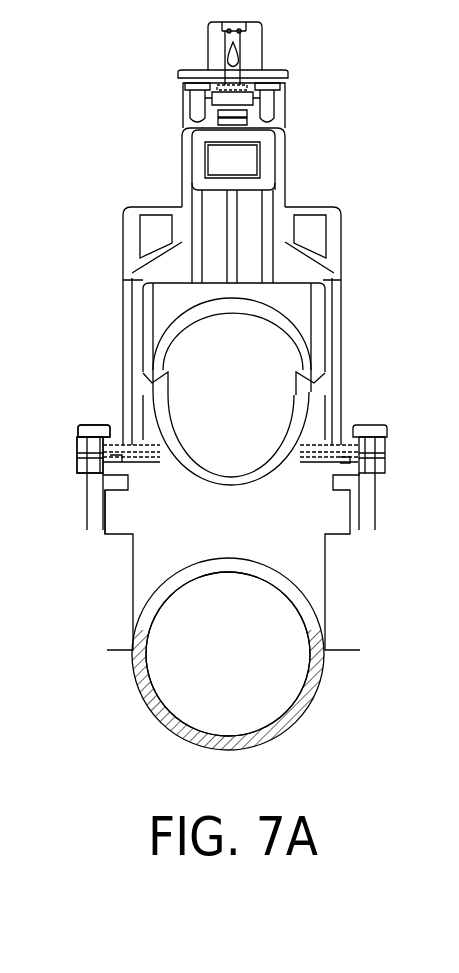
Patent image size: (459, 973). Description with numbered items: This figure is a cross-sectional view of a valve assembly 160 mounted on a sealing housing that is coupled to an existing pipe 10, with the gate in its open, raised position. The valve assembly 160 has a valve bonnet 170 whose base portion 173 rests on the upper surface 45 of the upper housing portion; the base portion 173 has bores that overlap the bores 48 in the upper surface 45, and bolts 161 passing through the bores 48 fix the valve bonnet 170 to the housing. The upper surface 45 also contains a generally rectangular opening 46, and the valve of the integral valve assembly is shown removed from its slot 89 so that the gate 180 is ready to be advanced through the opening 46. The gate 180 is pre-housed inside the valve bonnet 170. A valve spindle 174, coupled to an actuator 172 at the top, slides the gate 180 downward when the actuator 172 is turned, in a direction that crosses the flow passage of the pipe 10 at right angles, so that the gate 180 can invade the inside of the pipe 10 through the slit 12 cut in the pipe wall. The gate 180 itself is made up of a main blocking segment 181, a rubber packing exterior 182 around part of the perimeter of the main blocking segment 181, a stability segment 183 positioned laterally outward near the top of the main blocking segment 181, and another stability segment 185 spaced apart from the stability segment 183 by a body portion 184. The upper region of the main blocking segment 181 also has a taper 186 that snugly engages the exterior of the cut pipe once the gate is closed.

The existing pipe 10 is at (160, 715).
The slit 12 is at (152, 610).
The upper surface 45 is at (78, 459).
The opening 46 is at (308, 475).
The bores 48 is at (88, 480).
The slot 89 is at (118, 513).
The valve assembly 160 is at (164, 187).
The bolts 161 is at (87, 445).
The valve bonnet 170 is at (335, 262).
The actuator 172 is at (257, 45).
The base portion 173 is at (382, 447).
The valve spindle 174 is at (243, 122).
The gate 180 is at (196, 350).
The main blocking segment 181 is at (205, 398).
The rubber packing exterior 182 is at (300, 413).
The stability segment 183 is at (317, 305).
The body portion 184 is at (215, 223).
The stability segment 185 is at (240, 158).
The taper 186 is at (330, 383).